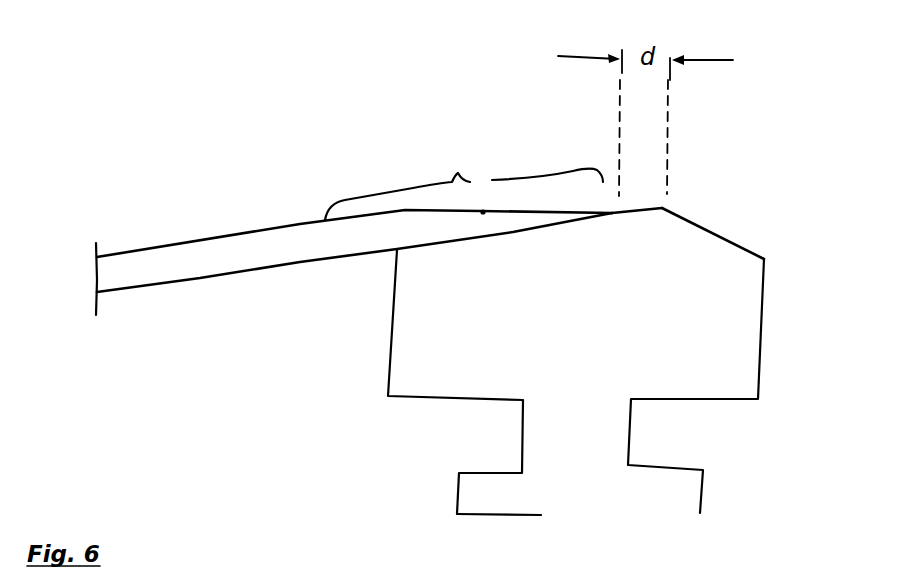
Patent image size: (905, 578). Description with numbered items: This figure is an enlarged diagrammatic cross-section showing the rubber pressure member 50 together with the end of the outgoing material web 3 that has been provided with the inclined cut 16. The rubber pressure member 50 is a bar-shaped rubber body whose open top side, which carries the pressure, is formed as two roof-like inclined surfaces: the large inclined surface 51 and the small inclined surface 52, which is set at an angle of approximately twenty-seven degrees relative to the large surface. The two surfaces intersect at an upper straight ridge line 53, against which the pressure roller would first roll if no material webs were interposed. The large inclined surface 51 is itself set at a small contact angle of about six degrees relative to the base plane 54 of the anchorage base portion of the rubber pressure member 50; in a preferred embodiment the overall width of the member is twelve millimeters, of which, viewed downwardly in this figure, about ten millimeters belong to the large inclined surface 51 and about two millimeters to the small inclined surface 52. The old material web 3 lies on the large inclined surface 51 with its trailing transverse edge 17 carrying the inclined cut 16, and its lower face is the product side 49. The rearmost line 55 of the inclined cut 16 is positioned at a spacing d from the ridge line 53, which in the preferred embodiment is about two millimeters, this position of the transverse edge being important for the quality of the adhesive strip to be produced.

The material web 3 is at (248, 298).
The inclined cut 16 is at (483, 212).
The trailing transverse edge 17 is at (415, 190).
The product side 49 is at (155, 290).
The rubber pressure member 50 is at (720, 267).
The large inclined surface 51 is at (513, 233).
The small inclined surface 52 is at (713, 229).
The ridge line 53 is at (661, 208).
The base plane 54 is at (495, 515).
The rearmost line 55 is at (613, 213).